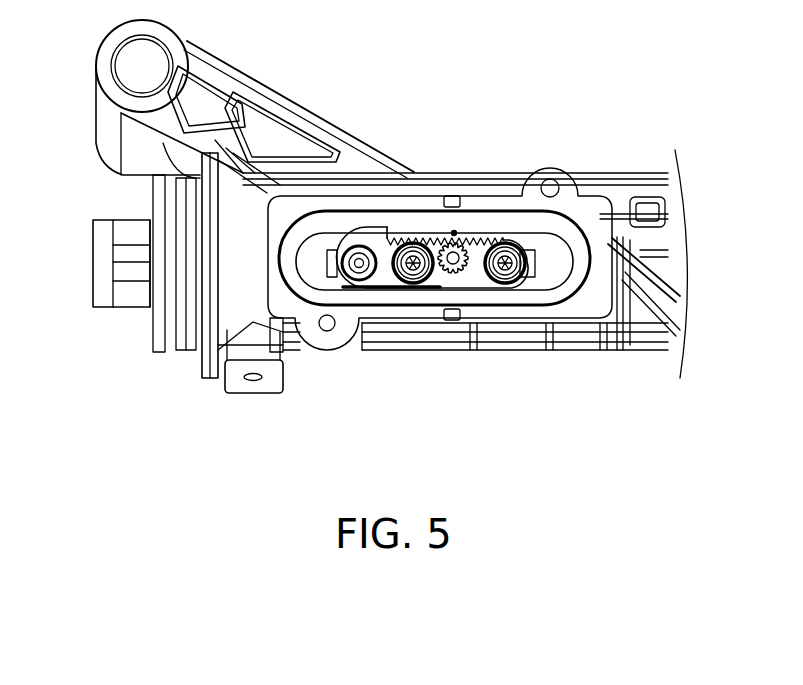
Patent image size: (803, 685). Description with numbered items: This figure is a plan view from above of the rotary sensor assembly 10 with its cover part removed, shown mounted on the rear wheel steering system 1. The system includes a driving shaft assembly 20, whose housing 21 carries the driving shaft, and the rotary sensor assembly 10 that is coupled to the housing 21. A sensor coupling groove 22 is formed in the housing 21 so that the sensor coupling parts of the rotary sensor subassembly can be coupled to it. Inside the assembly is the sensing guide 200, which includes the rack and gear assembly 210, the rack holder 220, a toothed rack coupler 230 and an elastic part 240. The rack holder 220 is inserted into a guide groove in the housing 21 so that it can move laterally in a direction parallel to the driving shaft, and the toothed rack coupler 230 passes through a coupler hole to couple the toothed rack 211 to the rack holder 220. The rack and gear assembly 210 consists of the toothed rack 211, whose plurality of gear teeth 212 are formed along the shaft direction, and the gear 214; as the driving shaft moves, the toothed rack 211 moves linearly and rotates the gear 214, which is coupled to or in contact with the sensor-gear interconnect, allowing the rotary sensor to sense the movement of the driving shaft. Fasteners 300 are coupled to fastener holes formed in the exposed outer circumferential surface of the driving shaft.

The rear wheel steering system 1 is at (368, 213).
The rotary sensor assembly 10 is at (630, 118).
The driving shaft assembly 20 is at (352, 72).
The housing 21 is at (232, 209).
The sensor coupling groove 22 is at (551, 186).
The sensing guide 200 is at (445, 82).
The rack and gear assembly 210 is at (478, 158).
The toothed rack 211 is at (360, 227).
The gear teeth 212 is at (453, 243).
The gear 214 is at (450, 278).
The rack holder 220 is at (473, 280).
The toothed rack coupler 230 is at (343, 287).
The elastic part 240 is at (400, 283).
The fastener 300 is at (413, 287).